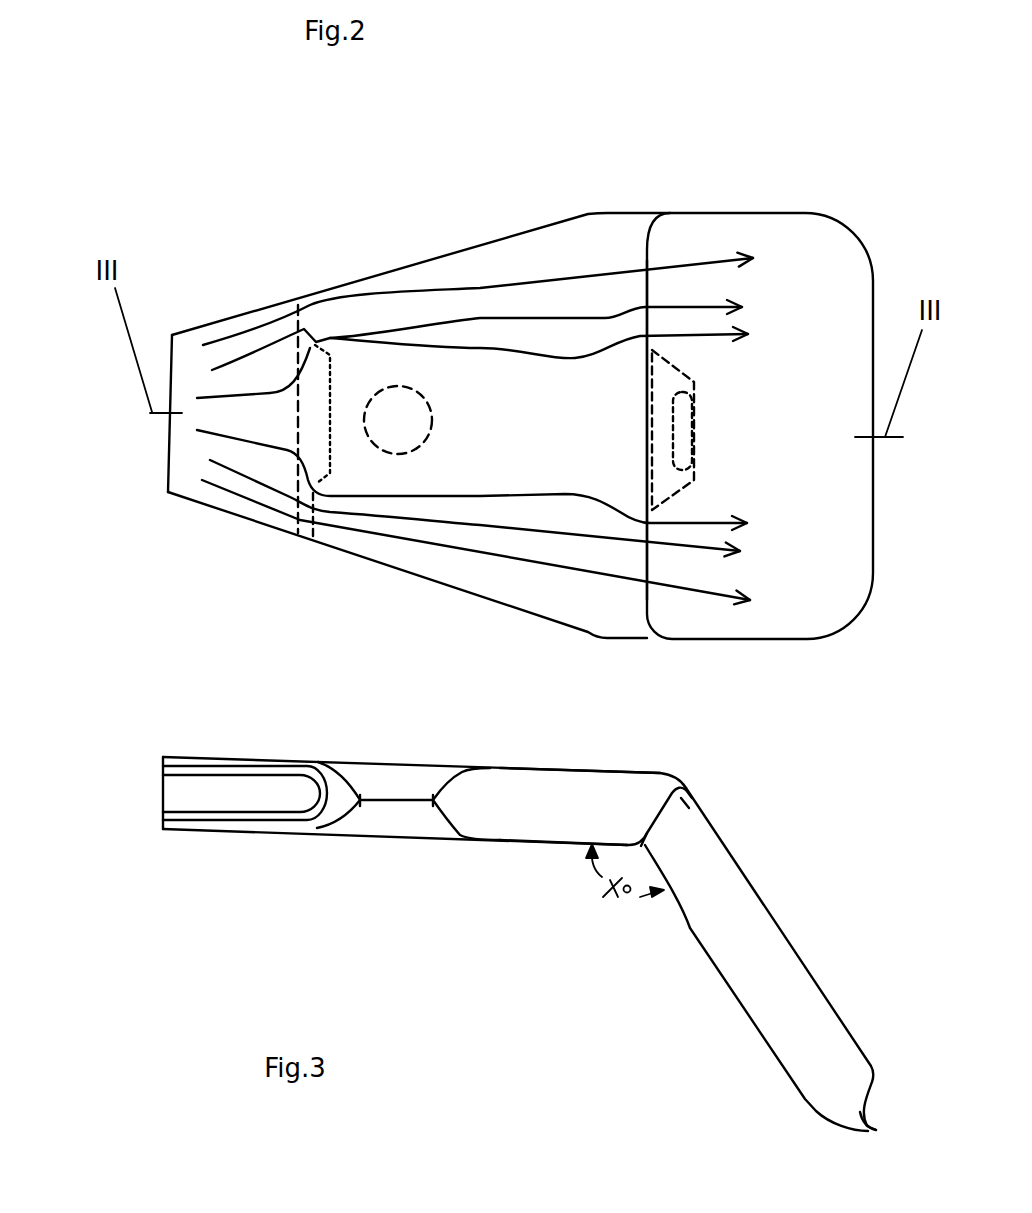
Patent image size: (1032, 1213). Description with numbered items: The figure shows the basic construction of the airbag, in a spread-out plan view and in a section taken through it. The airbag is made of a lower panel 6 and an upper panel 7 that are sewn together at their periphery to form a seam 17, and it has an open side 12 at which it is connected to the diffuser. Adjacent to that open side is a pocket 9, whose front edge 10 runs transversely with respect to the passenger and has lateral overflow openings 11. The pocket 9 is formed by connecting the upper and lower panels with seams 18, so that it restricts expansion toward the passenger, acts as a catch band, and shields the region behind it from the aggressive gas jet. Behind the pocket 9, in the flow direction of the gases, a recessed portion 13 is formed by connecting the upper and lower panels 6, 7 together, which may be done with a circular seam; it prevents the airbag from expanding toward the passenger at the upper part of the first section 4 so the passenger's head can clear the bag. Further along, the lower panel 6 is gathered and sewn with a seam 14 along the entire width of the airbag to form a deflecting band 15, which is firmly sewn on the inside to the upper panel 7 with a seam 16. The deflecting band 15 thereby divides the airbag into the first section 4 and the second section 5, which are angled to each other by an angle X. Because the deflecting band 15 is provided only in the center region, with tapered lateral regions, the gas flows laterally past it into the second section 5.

In FIG. 2, the first section 4 is at (539, 256).
In FIG. 3, the first section 4 is at (537, 805).
In FIG. 2, the second section 5 is at (798, 259).
In FIG. 3, the second section 5 is at (766, 973).
In FIG. 2, the lower panel 6 is at (585, 593).
In FIG. 3, the lower panel 6 is at (563, 847).
In FIG. 3, the upper panel 7 is at (613, 770).
In FIG. 3, the pocket 9 is at (240, 765).
In FIG. 2, the front edge 10 is at (313, 345).
In FIG. 3, the front edge 10 is at (330, 800).
In FIG. 2, the lateral overflow openings 11 is at (330, 400).
In FIG. 2, the open side 12 is at (167, 447).
In FIG. 3, the open side 12 is at (162, 783).
In FIG. 2, the recessed portion 13 is at (399, 386).
In FIG. 3, the recessed portion 13 is at (397, 798).
In FIG. 2, the seam 14 is at (648, 383).
In FIG. 3, the seam 14 is at (647, 835).
In FIG. 2, the deflecting band 15 is at (671, 363).
In FIG. 3, the deflecting band 15 is at (658, 813).
In FIG. 2, the seam 16 is at (675, 420).
In FIG. 3, the seam 16 is at (685, 803).
In FIG. 3, the seam 17 is at (875, 1128).
In FIG. 2, the seams 18 is at (298, 393).
In FIG. 3, the seams 18 is at (296, 770).